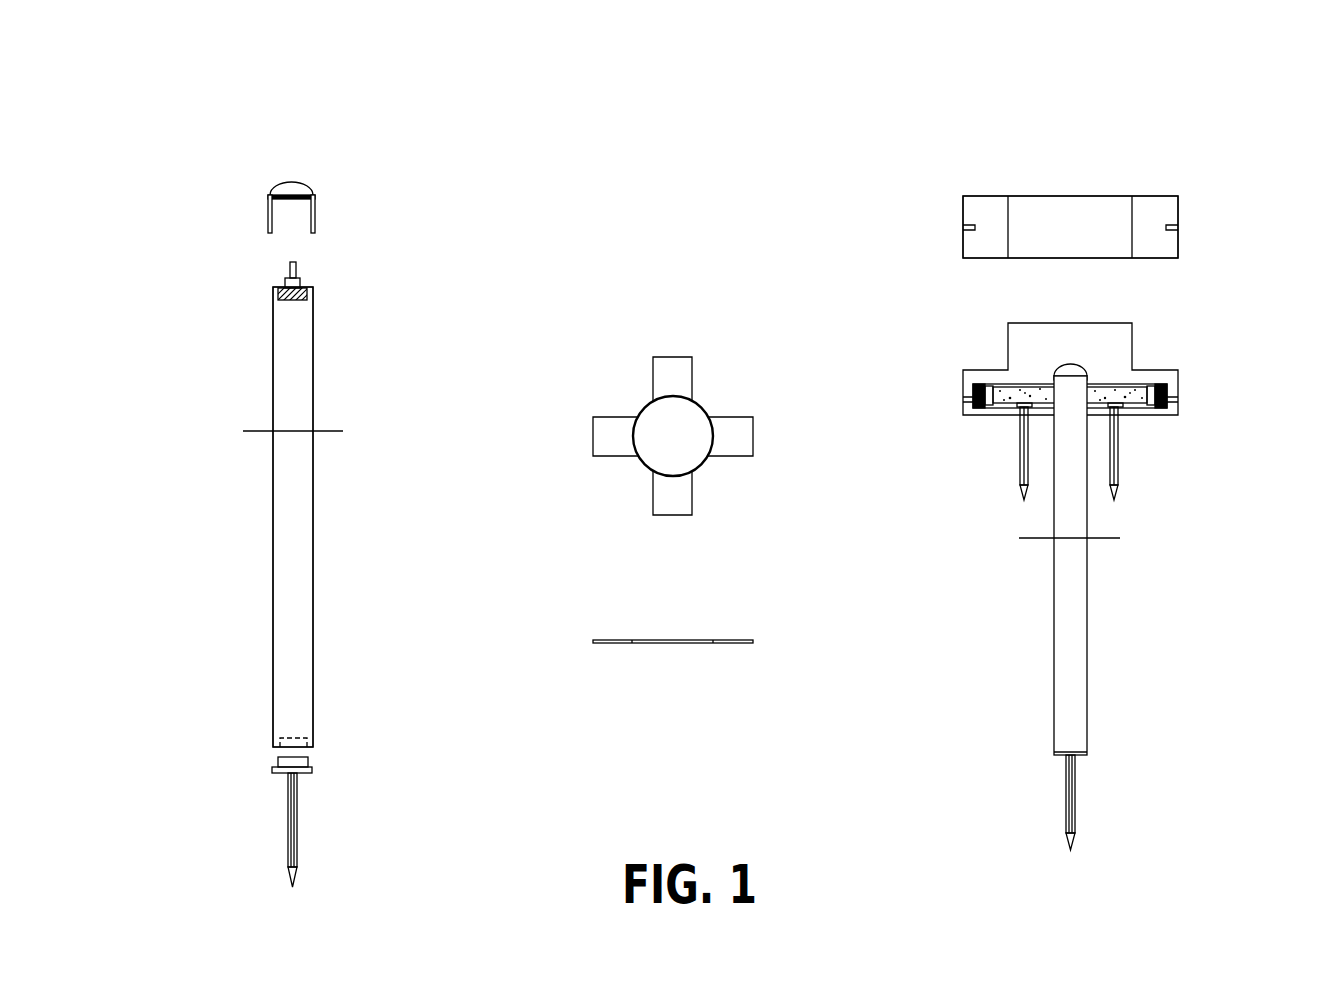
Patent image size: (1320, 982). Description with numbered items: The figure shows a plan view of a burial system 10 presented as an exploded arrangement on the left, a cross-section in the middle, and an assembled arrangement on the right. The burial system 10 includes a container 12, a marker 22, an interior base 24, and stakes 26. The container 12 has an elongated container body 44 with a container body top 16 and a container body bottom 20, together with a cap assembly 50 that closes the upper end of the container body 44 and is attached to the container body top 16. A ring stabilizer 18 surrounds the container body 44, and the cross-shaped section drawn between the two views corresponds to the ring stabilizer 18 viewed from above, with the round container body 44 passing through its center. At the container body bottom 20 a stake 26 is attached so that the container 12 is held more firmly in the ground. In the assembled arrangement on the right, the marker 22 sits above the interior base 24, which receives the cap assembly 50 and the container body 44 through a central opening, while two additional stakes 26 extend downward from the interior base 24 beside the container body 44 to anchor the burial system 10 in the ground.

The burial system 10 is at (1214, 136).
The container 12 is at (266, 155).
The container body top 16 is at (297, 283).
The ring stabilizer 18 is at (243, 431).
The container body bottom 20 is at (307, 745).
The marker 22 is at (1130, 196).
The interior base 24 is at (1132, 340).
The stakes 26 is at (1016, 465).
The container body 44 is at (298, 577).
The cap assembly 50 is at (302, 188).